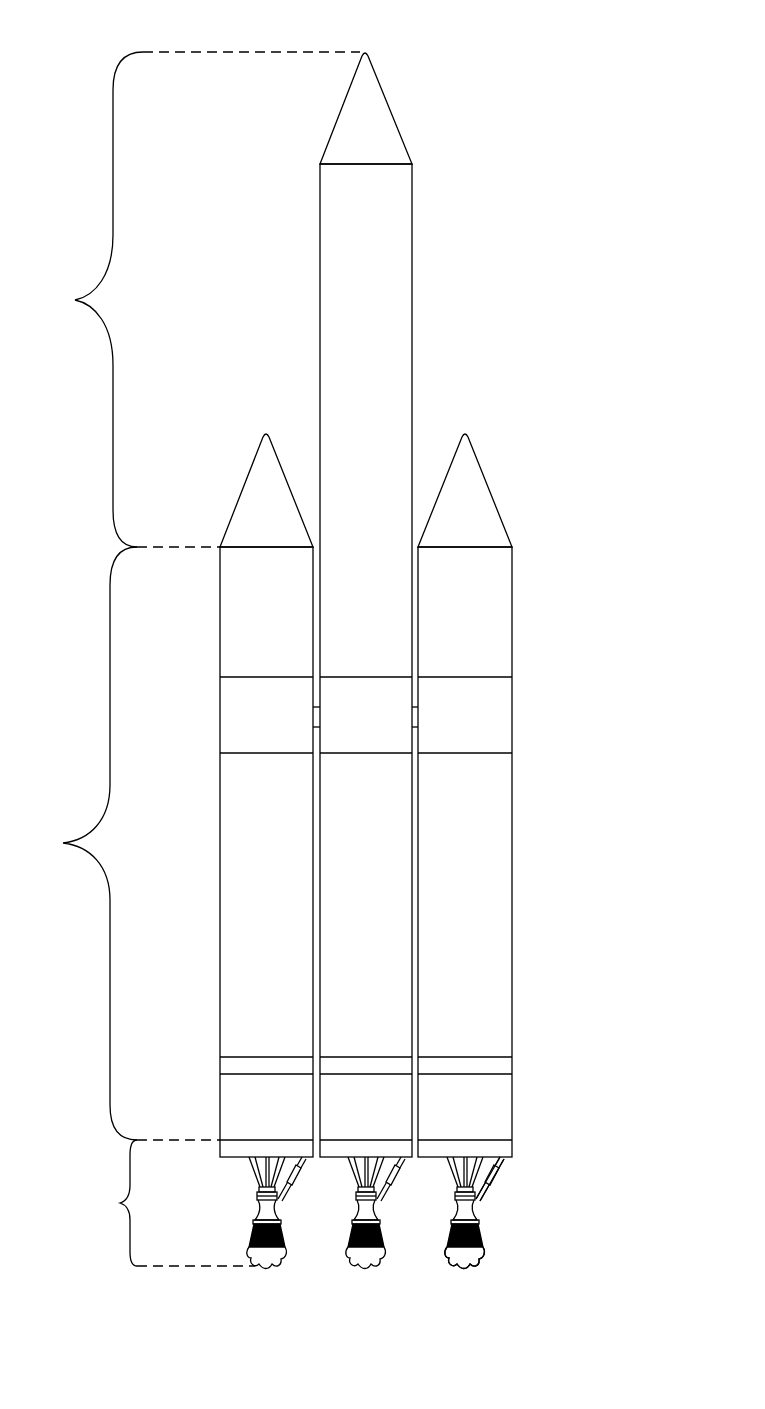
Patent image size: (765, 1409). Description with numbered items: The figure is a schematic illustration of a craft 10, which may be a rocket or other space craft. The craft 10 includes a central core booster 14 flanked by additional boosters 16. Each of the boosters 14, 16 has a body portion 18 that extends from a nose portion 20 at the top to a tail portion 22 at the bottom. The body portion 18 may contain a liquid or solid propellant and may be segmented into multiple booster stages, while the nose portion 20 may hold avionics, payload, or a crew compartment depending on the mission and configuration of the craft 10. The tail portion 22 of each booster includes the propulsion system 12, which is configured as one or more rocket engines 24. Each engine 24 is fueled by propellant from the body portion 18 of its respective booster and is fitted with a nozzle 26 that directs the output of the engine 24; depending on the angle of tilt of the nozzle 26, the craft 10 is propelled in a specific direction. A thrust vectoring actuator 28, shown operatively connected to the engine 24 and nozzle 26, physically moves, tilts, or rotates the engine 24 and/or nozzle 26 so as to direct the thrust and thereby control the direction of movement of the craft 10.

The craft 10 is at (444, 37).
The propulsion system 12 is at (519, 1229).
The core booster 14 is at (396, 313).
The additional boosters 16 is at (233, 622).
The body portion 18 is at (126, 843).
The nose portion 20 is at (201, 299).
The tail portion 22 is at (171, 1203).
The engine 24 is at (359, 1206).
The nozzle 26 is at (469, 1262).
The thrust vectoring actuator 28 is at (500, 1180).